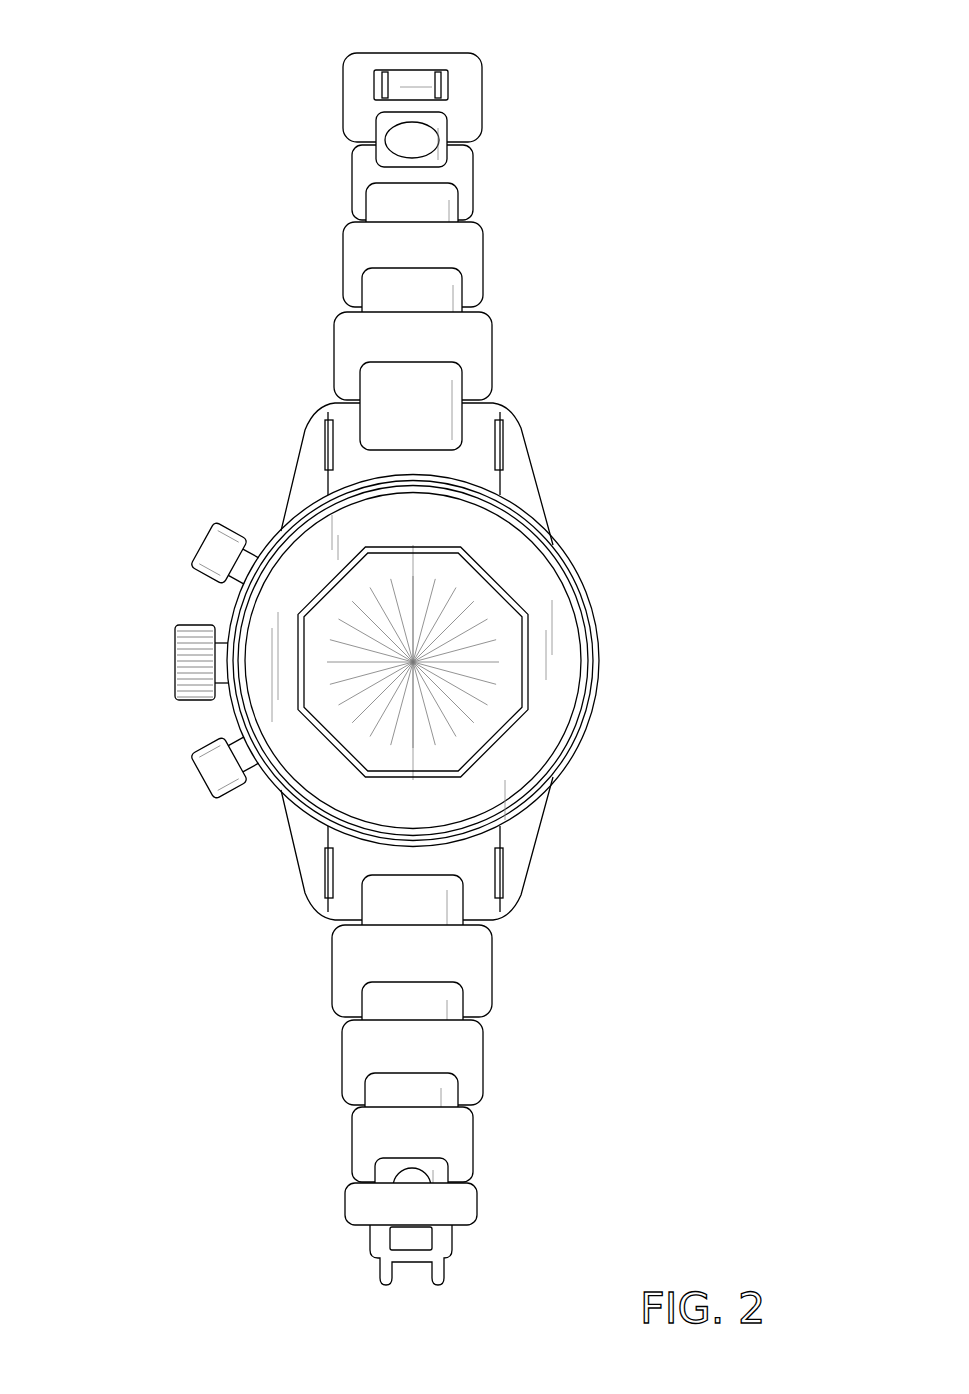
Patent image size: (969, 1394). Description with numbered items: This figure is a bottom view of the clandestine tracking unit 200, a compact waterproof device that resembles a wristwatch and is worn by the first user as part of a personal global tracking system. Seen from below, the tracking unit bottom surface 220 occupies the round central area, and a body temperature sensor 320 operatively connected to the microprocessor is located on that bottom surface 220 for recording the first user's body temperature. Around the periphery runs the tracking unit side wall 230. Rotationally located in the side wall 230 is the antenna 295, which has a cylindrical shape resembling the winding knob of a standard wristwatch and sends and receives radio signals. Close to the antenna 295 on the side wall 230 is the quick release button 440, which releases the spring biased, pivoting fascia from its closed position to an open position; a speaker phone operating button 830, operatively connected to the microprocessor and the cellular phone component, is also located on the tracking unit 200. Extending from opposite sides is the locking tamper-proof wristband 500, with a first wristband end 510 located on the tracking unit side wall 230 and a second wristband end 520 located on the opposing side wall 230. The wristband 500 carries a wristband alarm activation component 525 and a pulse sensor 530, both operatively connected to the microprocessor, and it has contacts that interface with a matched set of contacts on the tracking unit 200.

The tracking unit 200 is at (392, 638).
The tracking unit bottom surface 220 is at (552, 707).
The tracking unit side wall 230 is at (568, 760).
The antenna 295 is at (176, 656).
The body temperature sensor 320 is at (475, 598).
The quick release button 440 is at (212, 772).
The locking tamper-proof wristband 500 is at (401, 662).
The first wristband end 510 is at (350, 473).
The second wristband end 520 is at (475, 903).
The wristband alarm activation component 525 is at (402, 1185).
The pulse sensor 530 is at (415, 138).
The speaker phone operating button 830 is at (213, 542).